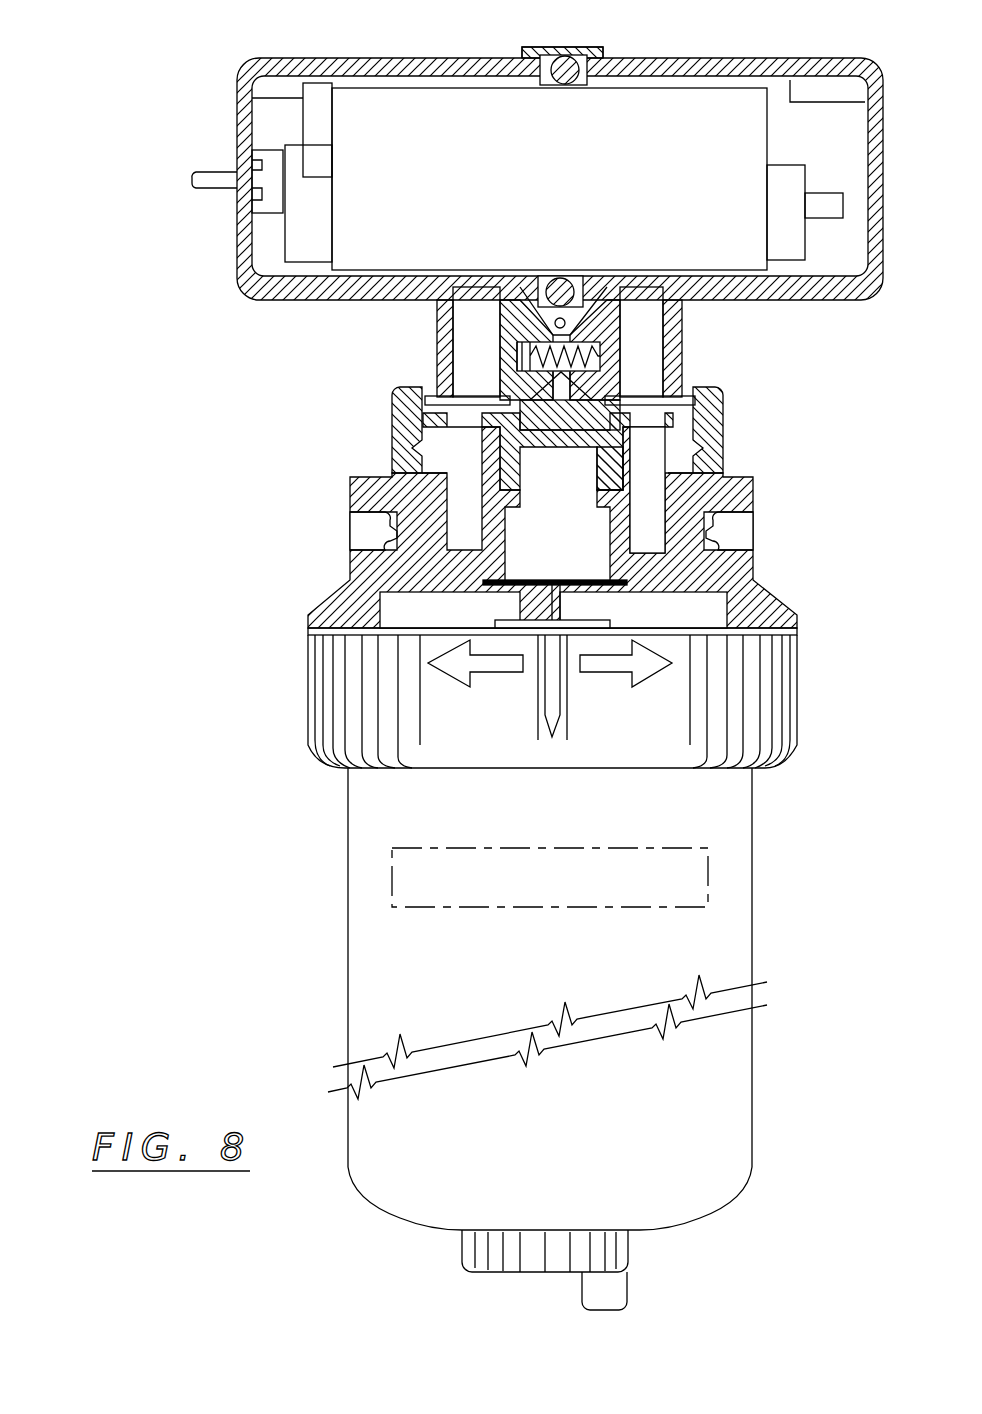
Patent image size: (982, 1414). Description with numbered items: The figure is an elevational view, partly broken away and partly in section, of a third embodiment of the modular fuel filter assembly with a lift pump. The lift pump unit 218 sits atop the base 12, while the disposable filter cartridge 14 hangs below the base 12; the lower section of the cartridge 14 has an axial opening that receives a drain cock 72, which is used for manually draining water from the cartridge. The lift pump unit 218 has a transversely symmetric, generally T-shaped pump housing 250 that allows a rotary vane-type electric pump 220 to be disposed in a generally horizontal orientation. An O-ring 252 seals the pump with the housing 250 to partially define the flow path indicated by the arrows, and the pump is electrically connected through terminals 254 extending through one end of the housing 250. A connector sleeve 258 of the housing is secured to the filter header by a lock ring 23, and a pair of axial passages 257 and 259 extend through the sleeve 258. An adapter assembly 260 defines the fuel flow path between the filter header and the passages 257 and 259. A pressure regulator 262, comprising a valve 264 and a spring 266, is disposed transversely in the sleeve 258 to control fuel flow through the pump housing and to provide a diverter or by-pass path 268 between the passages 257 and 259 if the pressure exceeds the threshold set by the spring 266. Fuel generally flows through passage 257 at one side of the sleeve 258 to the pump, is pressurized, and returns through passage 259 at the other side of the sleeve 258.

The lift pump unit 218 is at (235, 46).
The pump housing 250 is at (568, 82).
The O-ring 252 is at (565, 70).
The rotary vane-type electric pump 220 is at (510, 190).
The terminals 254 is at (215, 192).
The pressure regulator 262 is at (560, 302).
The spring 266 is at (590, 335).
The axial passage 259 is at (437, 322).
The valve 264 is at (645, 322).
The by-pass path 268 is at (452, 360).
The connector sleeve 258 is at (682, 348).
The axial passage 257 is at (645, 372).
The lock ring 23 is at (400, 425).
The adapter assembly 260 is at (627, 477).
The base 12 is at (330, 605).
The disposable filter cartridge 14 is at (742, 908).
The drain cock 72 is at (612, 1248).